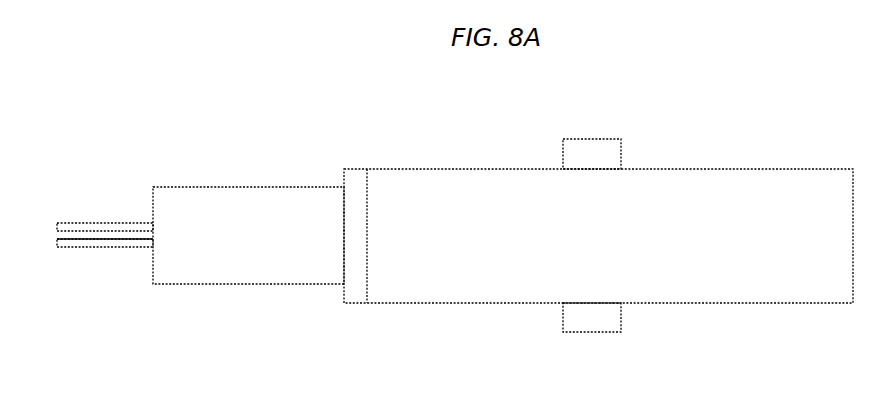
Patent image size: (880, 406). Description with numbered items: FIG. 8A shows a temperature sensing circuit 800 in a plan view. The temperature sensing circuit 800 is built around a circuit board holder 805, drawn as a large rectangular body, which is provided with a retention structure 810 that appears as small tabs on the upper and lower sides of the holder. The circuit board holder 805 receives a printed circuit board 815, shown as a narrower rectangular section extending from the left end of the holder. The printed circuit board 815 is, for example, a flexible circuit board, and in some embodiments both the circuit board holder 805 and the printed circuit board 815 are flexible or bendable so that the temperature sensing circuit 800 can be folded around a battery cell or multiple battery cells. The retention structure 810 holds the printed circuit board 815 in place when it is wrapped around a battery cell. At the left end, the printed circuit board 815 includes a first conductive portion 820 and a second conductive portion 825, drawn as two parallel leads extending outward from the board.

The temperature sensing circuit 800 is at (686, 87).
The circuit board holder 805 is at (715, 168).
The retention structure 810 is at (590, 332).
The printed circuit board 815 is at (247, 283).
The first conductive portion 820 is at (128, 249).
The second conductive portion 825 is at (128, 222).